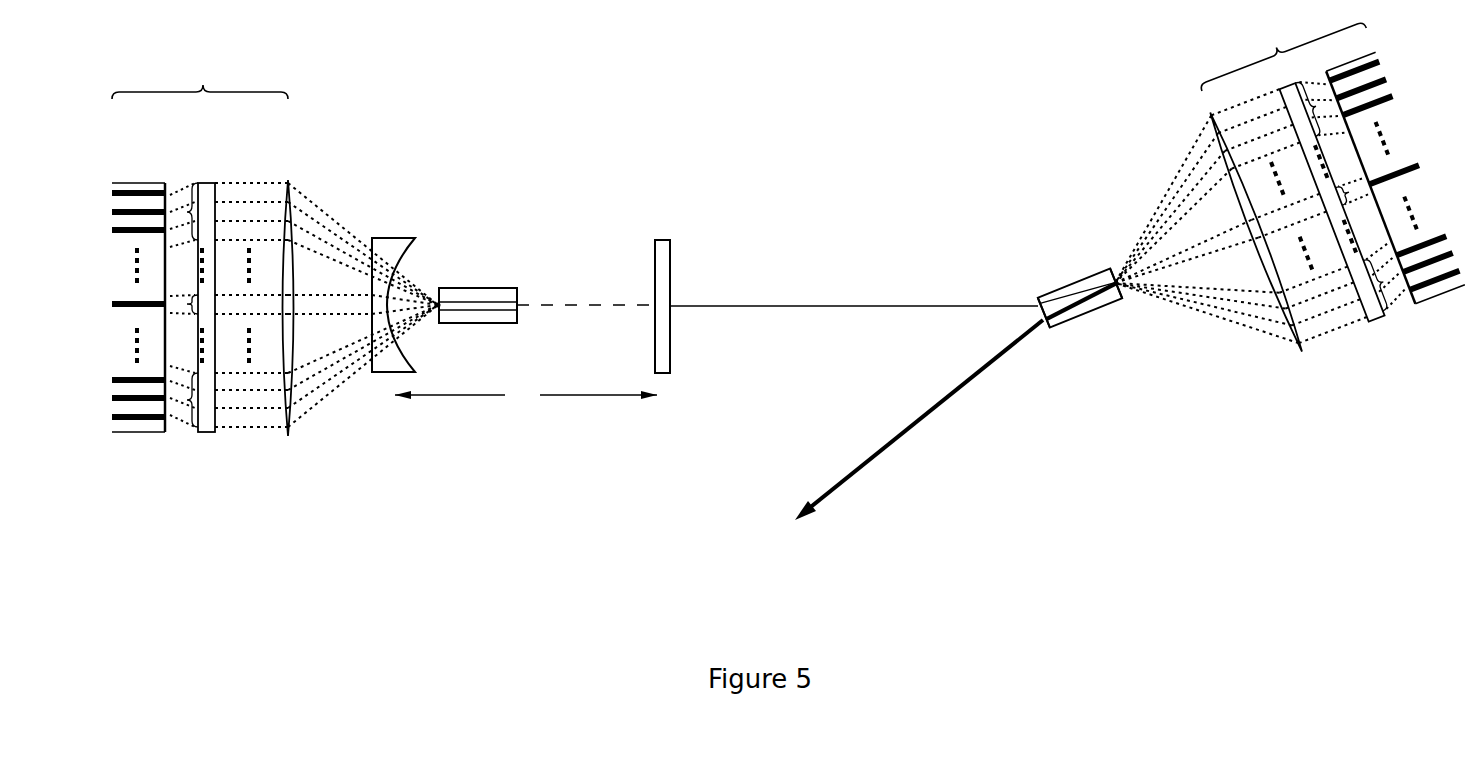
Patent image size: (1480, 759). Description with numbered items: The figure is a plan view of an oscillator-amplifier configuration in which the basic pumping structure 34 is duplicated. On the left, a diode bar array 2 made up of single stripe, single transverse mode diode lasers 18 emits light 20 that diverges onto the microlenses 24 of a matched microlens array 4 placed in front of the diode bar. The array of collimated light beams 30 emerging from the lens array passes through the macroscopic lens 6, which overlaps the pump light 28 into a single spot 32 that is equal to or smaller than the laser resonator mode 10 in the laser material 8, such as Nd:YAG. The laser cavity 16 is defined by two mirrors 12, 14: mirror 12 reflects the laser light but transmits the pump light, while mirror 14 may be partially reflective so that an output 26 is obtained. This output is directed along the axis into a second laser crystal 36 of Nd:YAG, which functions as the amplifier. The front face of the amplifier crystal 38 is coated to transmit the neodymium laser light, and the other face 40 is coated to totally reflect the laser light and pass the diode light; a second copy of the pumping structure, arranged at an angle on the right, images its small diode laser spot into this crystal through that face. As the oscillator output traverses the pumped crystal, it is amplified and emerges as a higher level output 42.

The diode bar array 2 is at (113, 284).
The microlens array 4 is at (212, 281).
The macroscopic lens 6 is at (296, 286).
The laser material 8 is at (498, 288).
The laser resonator mode 10 is at (438, 305).
The mirror 12 is at (391, 238).
The mirror 14 is at (662, 238).
The laser cavity 16 is at (526, 396).
The diode lasers 18 is at (113, 203).
The light 20 is at (181, 288).
The microlenses 24 is at (184, 327).
The output 26 is at (803, 304).
The pump light 28 is at (363, 303).
The collimated light beams 30 is at (251, 289).
The spot 32 is at (438, 305).
The basic pumping structure 34 is at (764, 225).
The laser crystal 36 is at (1058, 293).
The front face of the amplifier crystal 38 is at (1044, 313).
The other face 40 is at (1116, 284).
The higher level output 42 is at (919, 420).